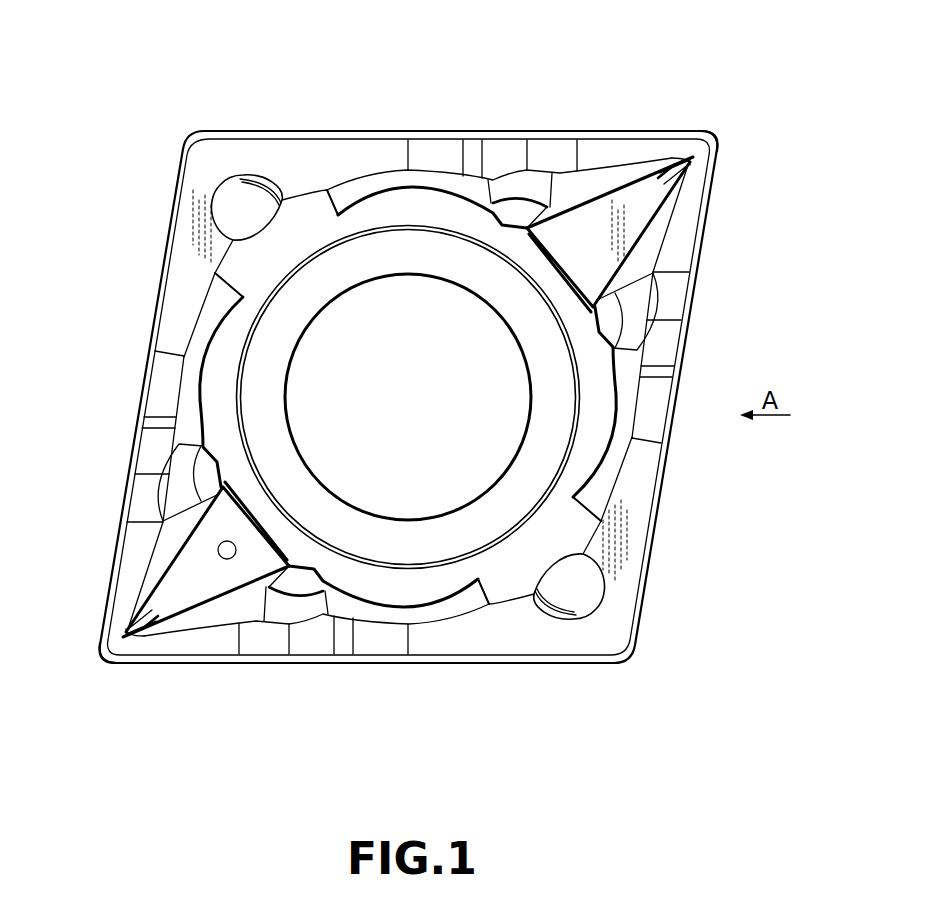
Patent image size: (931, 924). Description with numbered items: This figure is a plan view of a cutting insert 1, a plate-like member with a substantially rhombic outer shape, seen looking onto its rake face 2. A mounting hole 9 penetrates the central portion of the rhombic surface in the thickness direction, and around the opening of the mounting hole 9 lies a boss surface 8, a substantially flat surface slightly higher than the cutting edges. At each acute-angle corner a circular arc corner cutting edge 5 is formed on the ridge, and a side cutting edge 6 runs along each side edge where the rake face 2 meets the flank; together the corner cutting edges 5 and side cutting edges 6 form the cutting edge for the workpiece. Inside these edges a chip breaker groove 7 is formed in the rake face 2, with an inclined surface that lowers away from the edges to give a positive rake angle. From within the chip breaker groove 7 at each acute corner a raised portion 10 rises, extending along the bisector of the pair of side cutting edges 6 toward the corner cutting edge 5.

The cutting insert 1 is at (212, 100).
The rake face 2 is at (650, 210).
The corner cutting edge 5 is at (730, 118).
The side cutting edge 6 is at (617, 133).
The chip breaker groove 7 is at (679, 138).
The boss surface 8 is at (432, 206).
The mounting hole 9 is at (510, 332).
The raised portion 10 is at (586, 216).